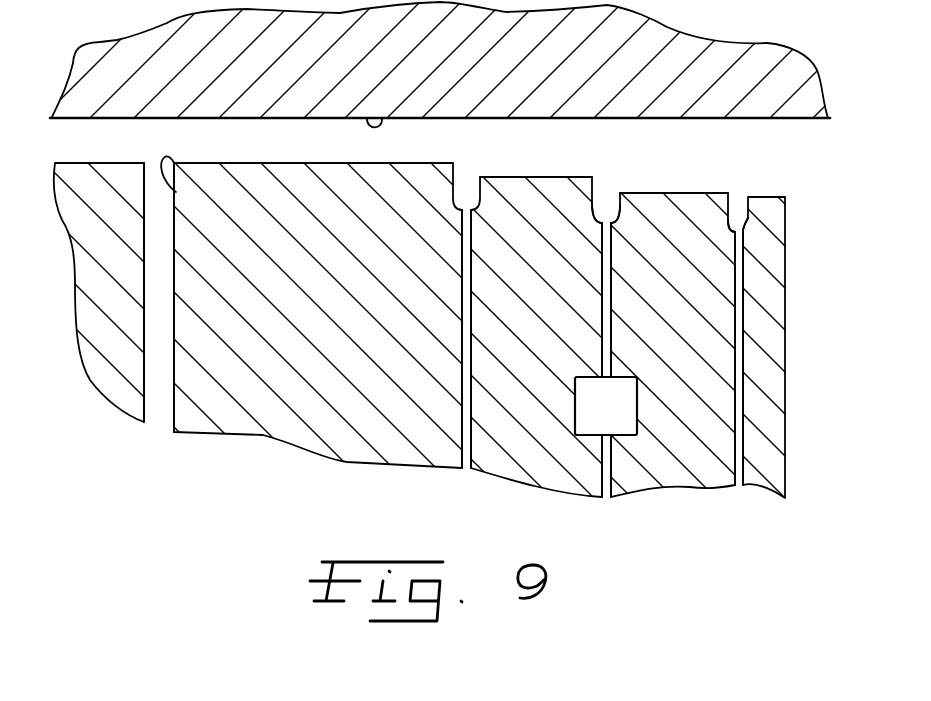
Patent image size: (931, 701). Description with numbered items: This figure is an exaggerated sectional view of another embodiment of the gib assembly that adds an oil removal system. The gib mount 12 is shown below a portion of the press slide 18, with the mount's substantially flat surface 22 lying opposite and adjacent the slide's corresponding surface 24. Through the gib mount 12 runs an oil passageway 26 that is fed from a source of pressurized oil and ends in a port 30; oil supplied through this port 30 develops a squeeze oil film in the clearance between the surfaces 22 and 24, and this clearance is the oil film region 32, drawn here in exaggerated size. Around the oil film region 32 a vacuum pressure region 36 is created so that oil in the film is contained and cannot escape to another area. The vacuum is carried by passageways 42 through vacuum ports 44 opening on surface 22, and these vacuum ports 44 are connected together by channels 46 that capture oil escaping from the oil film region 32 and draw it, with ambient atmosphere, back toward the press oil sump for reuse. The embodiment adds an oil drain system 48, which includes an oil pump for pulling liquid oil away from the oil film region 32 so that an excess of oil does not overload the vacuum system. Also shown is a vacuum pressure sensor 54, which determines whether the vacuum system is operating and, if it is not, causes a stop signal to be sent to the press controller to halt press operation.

The gib mount 12 is at (770, 290).
The press slide 18 is at (557, 81).
The surface 22 is at (327, 161).
The surface 24 is at (381, 117).
The oil passageway 26 is at (145, 263).
The port 30 is at (180, 195).
The oil film region 32 is at (283, 141).
The vacuum pressure region 36 is at (777, 160).
The passageways 42 is at (608, 334).
The vacuum ports 44 is at (614, 224).
The channels 46 is at (598, 203).
The oil drain system 48 is at (462, 324).
The vacuum pressure sensor 54 is at (636, 420).